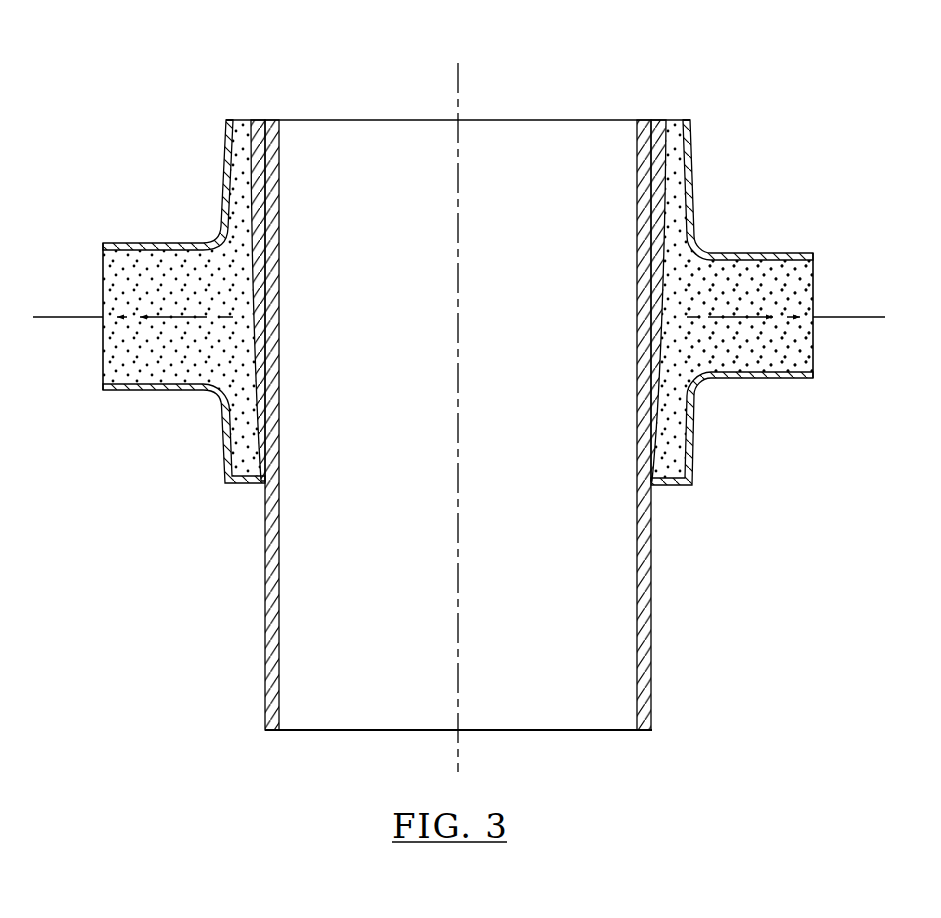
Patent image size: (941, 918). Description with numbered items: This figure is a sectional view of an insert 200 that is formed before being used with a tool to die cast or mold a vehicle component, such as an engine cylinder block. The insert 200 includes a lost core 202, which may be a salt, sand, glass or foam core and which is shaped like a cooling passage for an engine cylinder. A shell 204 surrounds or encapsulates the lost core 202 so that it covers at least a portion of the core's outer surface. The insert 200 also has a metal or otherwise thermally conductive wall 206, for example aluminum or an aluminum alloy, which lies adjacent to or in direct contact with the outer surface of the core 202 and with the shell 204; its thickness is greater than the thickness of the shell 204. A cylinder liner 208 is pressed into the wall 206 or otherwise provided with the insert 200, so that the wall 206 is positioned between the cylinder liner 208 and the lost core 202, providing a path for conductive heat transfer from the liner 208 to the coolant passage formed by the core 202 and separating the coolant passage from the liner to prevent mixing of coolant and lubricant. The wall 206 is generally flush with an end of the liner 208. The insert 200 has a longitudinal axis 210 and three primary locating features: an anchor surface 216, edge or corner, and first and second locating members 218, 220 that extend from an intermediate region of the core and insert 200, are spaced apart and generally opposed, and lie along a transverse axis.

The insert 200 is at (868, 126).
The lost core region 202 is at (765, 292).
The shell 204 is at (692, 168).
The metal wall 206 is at (658, 132).
The cylinder liner 208 is at (653, 672).
The longitudinal axis 210 is at (455, 76).
The anchor surface 216 is at (226, 114).
The first locating member 218 is at (788, 355).
The second locating member 220 is at (142, 362).